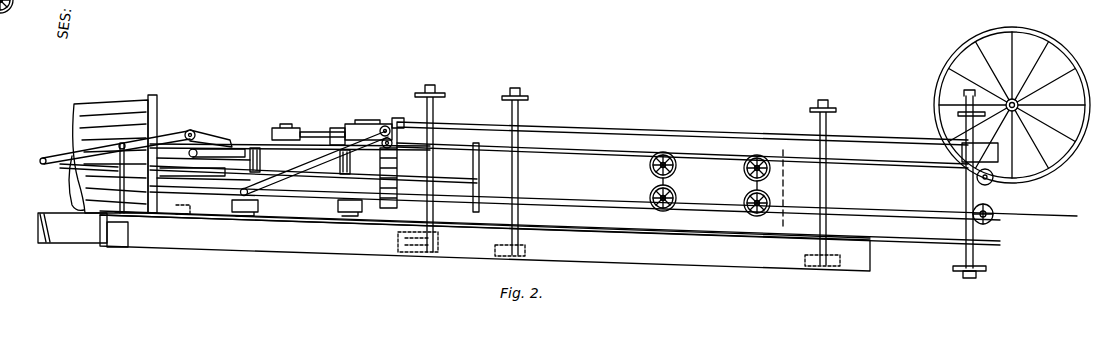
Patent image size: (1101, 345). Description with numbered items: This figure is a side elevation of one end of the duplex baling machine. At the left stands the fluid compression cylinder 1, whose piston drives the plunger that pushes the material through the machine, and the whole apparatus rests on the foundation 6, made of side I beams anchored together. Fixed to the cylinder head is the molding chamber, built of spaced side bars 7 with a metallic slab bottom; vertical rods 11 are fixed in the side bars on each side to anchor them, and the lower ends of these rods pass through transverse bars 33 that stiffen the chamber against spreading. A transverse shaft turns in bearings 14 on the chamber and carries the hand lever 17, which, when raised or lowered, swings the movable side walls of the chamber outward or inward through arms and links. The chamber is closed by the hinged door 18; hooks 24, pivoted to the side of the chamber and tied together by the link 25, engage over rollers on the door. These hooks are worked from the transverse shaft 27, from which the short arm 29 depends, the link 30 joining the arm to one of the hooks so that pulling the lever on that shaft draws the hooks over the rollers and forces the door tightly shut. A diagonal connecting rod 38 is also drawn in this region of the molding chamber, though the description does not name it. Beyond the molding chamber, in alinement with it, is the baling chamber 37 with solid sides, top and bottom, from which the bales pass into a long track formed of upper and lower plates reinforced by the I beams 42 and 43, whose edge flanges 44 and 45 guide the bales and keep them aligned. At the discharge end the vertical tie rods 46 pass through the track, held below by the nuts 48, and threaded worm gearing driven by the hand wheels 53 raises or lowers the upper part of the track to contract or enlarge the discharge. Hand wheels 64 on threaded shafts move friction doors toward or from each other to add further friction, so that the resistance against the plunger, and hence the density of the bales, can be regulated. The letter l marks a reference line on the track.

The fluid compression cylinder 1 is at (120, 103).
The foundation 6 is at (645, 263).
The side bars 7 is at (205, 141).
The vertical rods 11 is at (310, 161).
The bearings 14 is at (192, 164).
The hand lever 17 is at (60, 156).
The door 18 is at (344, 124).
The hooks 24 is at (286, 127).
The link 25 is at (316, 126).
The transverse shaft 27 is at (398, 117).
The short arm 29 is at (394, 140).
The link 30 is at (397, 160).
The transverse bars 33 is at (269, 209).
The baling chamber 37 is at (470, 150).
The connecting rod 38 is at (315, 163).
The I beam 42 is at (737, 131).
The I beam 43 is at (898, 243).
The flange 44 is at (548, 155).
The flange 45 is at (545, 199).
The vertical tie rods 46 is at (964, 198).
The nuts 48 is at (975, 278).
The hand wheels 53 is at (1078, 150).
The hand wheels 64 is at (676, 171).
The reference line l is at (787, 184).